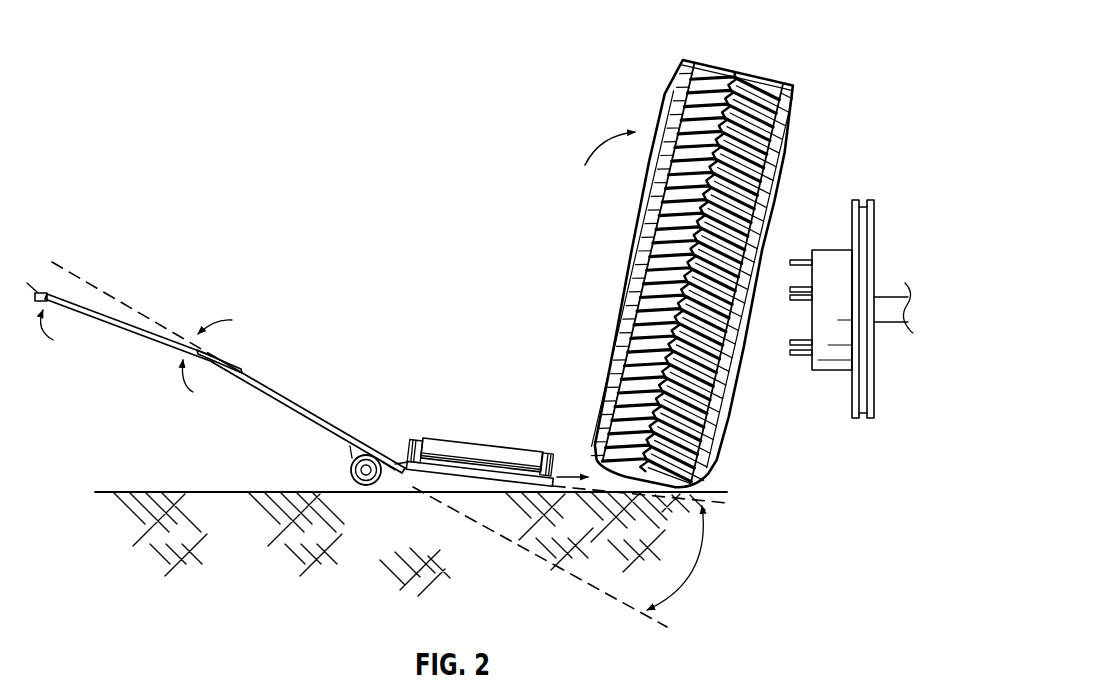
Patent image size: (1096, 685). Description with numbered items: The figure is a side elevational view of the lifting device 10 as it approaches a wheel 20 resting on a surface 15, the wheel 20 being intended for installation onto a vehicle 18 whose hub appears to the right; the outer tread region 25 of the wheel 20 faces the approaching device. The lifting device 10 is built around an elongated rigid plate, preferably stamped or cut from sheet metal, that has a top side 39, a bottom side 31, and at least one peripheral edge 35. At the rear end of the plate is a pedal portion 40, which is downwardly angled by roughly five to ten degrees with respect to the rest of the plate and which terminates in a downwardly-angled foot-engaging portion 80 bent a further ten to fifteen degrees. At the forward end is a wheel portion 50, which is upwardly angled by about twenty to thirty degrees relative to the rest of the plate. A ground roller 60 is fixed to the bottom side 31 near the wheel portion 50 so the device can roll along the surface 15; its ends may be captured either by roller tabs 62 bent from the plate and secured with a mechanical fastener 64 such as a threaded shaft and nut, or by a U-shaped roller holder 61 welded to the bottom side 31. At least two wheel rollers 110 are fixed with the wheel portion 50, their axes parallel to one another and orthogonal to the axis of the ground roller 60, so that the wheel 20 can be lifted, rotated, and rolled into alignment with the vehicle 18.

The lifting device 10 is at (345, 166).
The surface 15 is at (177, 491).
The vehicle 18 is at (832, 250).
The wheel 20 is at (705, 62).
The tire tread 25 is at (735, 70).
The bottom side 31 is at (222, 375).
The peripheral edge 35 is at (272, 388).
The top side 39 is at (345, 430).
The pedal portion 40 is at (120, 318).
The wheel portion 50 is at (467, 487).
The ground roller 60 is at (360, 488).
The U-shaped roller holder 61 is at (409, 452).
The roller tabs 62 is at (350, 473).
The mechanical fastener 64 is at (356, 464).
The ramp lip 80 is at (50, 287).
The wheel rollers 110 is at (457, 440).